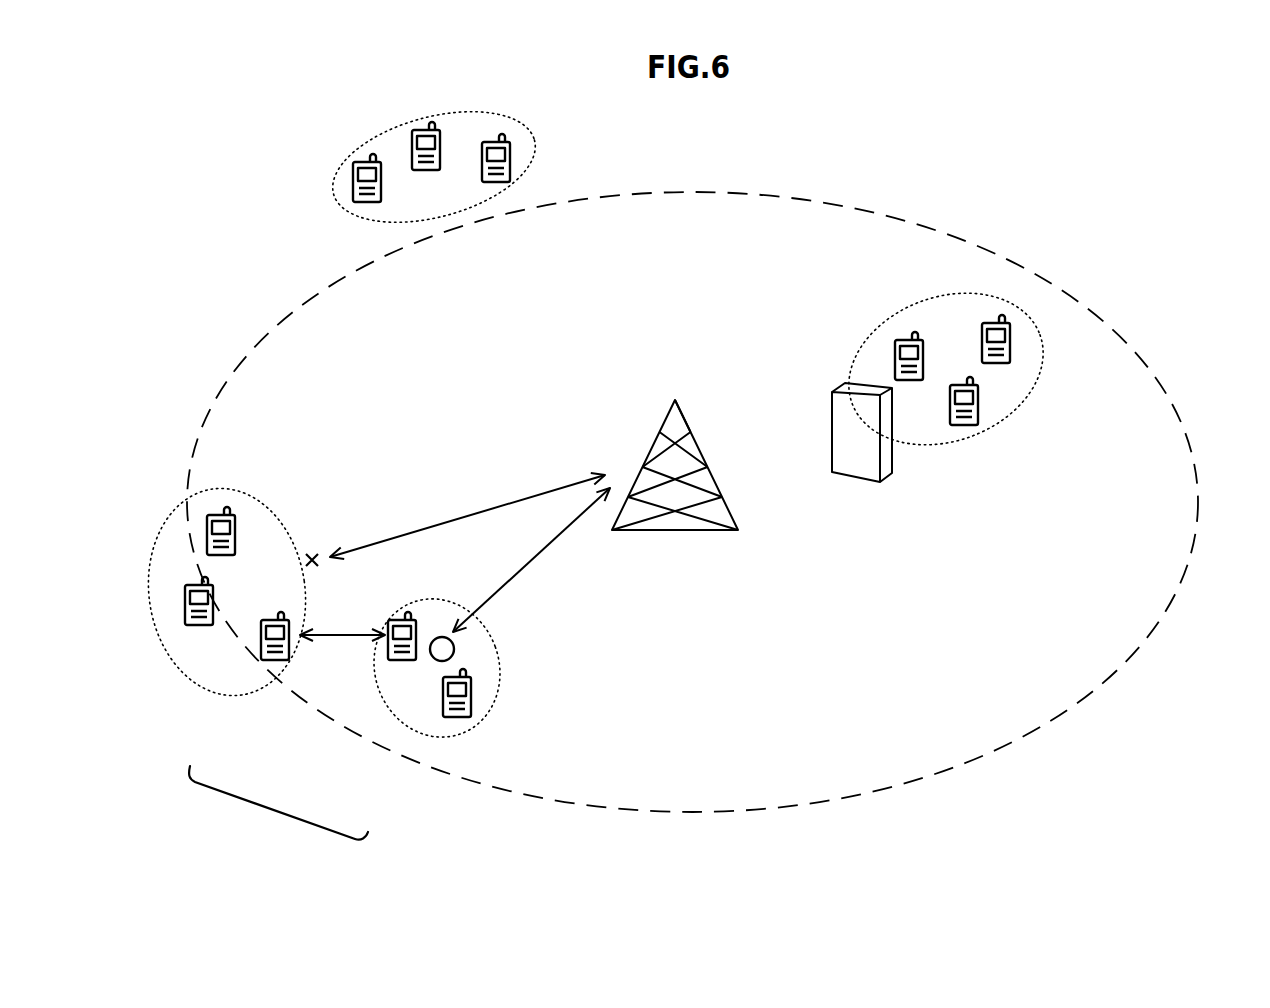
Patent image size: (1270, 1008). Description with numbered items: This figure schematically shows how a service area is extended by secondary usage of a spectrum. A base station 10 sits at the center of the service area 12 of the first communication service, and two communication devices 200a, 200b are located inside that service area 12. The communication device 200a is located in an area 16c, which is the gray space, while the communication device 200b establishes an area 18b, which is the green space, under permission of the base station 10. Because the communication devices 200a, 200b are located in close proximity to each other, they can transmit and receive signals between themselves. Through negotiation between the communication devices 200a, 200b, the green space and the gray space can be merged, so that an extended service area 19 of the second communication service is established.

The base station 10 is at (675, 400).
The service area 12 is at (1197, 484).
The area 16c is at (230, 695).
The area 18b is at (430, 725).
The extended service area 19 is at (258, 807).
The communication device 200a is at (290, 627).
The communication device 200b is at (418, 617).